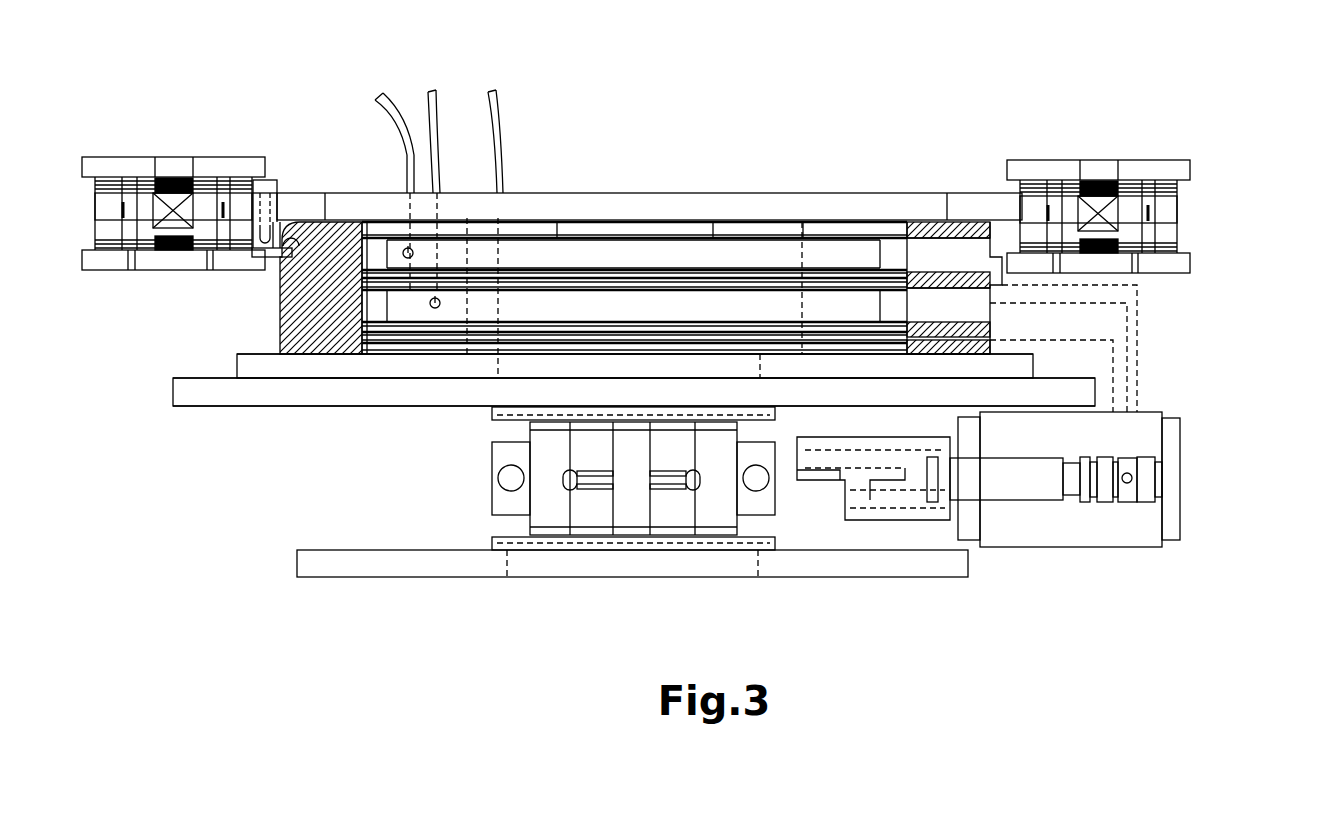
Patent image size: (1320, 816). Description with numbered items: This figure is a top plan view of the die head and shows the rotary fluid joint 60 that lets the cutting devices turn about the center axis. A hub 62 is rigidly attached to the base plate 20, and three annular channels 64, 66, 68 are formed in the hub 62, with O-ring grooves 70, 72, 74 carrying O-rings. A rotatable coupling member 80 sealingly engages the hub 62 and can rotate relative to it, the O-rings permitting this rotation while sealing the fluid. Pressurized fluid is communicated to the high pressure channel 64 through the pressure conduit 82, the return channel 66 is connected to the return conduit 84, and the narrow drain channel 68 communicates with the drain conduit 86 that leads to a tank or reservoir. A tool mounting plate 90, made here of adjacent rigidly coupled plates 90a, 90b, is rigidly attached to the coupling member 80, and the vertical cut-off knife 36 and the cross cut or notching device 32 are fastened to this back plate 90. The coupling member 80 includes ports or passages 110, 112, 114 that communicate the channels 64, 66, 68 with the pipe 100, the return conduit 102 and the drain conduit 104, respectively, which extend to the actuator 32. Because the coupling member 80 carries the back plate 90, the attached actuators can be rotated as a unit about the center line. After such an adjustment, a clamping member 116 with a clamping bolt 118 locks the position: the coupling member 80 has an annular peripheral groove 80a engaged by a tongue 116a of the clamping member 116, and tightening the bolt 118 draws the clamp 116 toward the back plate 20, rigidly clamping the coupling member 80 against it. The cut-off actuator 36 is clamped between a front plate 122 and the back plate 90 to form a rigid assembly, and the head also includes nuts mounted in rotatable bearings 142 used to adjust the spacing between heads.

The base plate 20 is at (605, 207).
The cross cut or notching device 32 is at (1152, 408).
The vertical cut-off knife 36 is at (475, 477).
The rotary fluid joint 60 is at (1012, 310).
The hub 62 is at (452, 252).
The annular channel 64 is at (598, 271).
The annular channel 66 is at (606, 322).
The narrow channel 68 is at (818, 333).
The O-ring groove 70 is at (732, 230).
The O-ring groove 72 is at (762, 282).
The O-ring groove 74 is at (860, 327).
The rotatable coupling member 80 is at (237, 297).
The annular peripheral groove 80a is at (290, 252).
The pressure conduit 82 is at (375, 102).
The return conduit 84 is at (438, 96).
The drain conduit 86 is at (500, 107).
The tool mounting plate 90 is at (350, 408).
The plate 90a is at (265, 395).
The plate 90b is at (260, 362).
The pipe 100 is at (1140, 339).
The conduit 102 is at (1128, 318).
The drain conduit 104 is at (1115, 383).
The port 110 is at (928, 266).
The port 112 is at (926, 317).
The port 114 is at (634, 392).
The clamping member 116 is at (257, 257).
The tongue 116a is at (275, 234).
The clamping bolt 118 is at (275, 181).
The front plate 122 is at (358, 563).
The rotatable bearing 142 is at (103, 165).